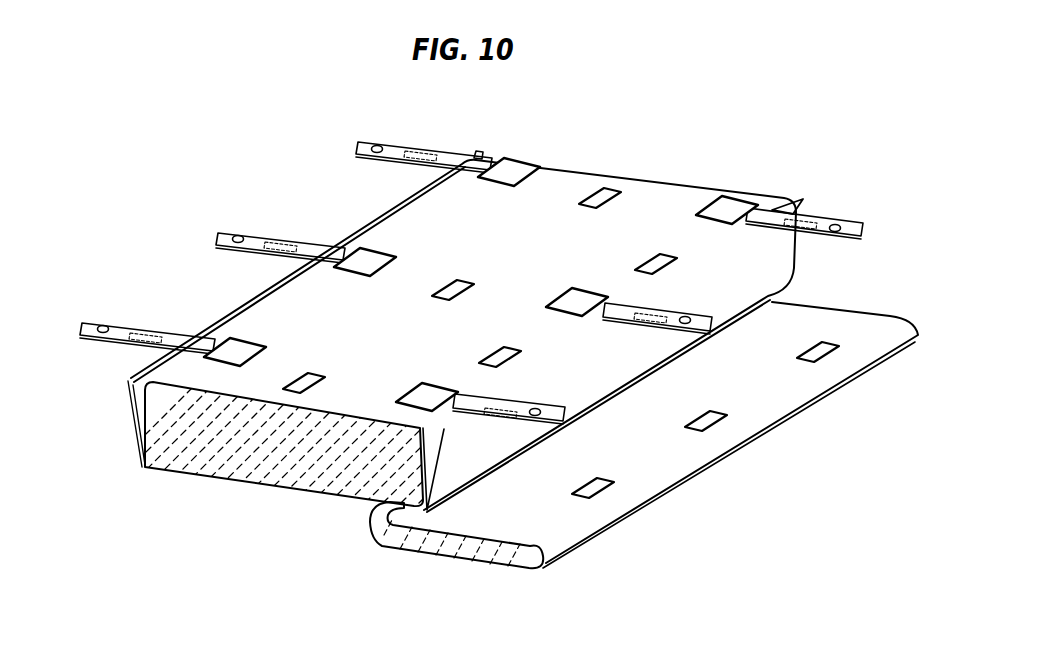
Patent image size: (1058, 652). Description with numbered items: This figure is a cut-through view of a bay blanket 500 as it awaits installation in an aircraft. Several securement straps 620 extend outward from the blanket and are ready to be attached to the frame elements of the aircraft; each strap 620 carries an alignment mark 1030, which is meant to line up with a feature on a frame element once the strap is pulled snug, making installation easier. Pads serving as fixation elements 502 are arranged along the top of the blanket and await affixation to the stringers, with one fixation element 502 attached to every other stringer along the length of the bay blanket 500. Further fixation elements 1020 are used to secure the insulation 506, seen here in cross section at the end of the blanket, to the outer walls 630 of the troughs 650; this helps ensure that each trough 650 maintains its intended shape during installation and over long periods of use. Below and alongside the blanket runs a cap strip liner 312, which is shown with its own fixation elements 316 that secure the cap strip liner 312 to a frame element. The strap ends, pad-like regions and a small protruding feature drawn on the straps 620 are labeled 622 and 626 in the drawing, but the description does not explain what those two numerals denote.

The bay blanket 500 is at (221, 132).
The fixation element 502 is at (600, 188).
The insulation 506 is at (208, 483).
The cap strip liner 312 is at (466, 558).
The fixation element 316 is at (822, 347).
The securement strap 620 is at (872, 168).
The connector pads 622 is at (730, 207).
The spring fin 626 is at (812, 218).
The outer wall 630 is at (588, 371).
The trough 650 is at (490, 148).
The fixation element 1020 is at (659, 256).
The alignment mark 1030 is at (838, 221).